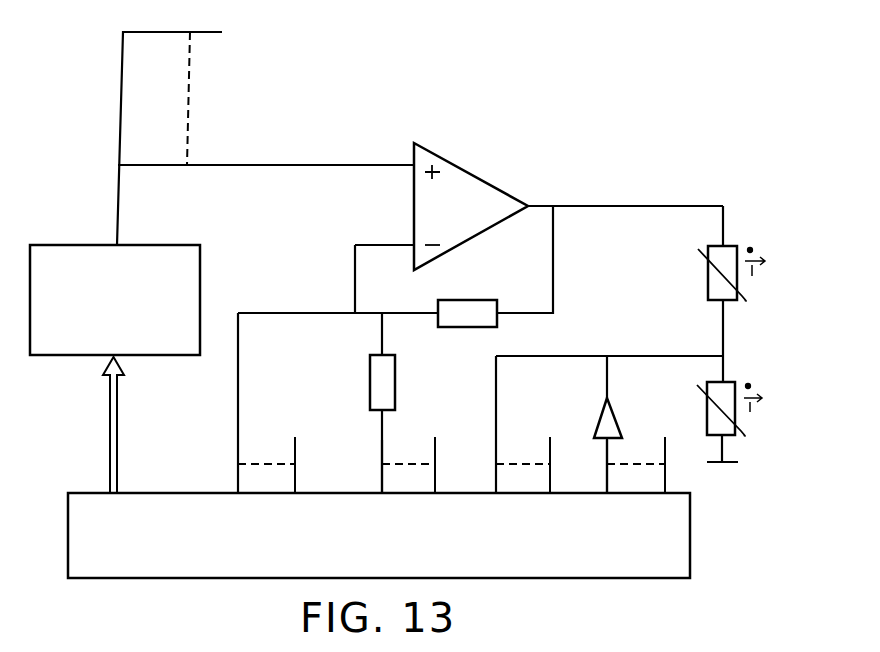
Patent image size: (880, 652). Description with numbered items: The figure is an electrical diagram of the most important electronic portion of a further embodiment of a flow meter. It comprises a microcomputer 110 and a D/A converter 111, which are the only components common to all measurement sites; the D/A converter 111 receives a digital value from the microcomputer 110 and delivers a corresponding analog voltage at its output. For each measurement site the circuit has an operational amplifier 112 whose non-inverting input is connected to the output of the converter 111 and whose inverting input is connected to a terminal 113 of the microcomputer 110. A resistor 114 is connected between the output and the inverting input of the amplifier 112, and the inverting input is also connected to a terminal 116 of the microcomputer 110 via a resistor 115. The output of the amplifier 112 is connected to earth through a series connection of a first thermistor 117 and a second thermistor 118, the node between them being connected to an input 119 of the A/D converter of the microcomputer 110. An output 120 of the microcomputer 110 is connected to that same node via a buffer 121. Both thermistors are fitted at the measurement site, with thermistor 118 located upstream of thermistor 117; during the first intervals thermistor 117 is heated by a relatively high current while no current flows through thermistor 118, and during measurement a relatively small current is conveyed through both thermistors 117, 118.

The microcomputer 110 is at (685, 548).
The D/A converter 111 is at (57, 243).
The operational amplifier 112 is at (478, 176).
The terminal 113 is at (236, 490).
The resistor 114 is at (455, 300).
The resistor 115 is at (368, 381).
The terminal 116 is at (380, 490).
The first thermistor 117 is at (705, 283).
The second thermistor 118 is at (728, 382).
The input 119 is at (493, 490).
The output 120 is at (604, 490).
The buffer 121 is at (598, 420).